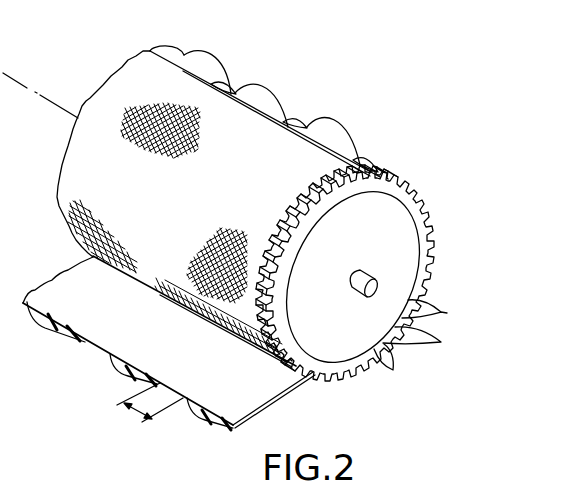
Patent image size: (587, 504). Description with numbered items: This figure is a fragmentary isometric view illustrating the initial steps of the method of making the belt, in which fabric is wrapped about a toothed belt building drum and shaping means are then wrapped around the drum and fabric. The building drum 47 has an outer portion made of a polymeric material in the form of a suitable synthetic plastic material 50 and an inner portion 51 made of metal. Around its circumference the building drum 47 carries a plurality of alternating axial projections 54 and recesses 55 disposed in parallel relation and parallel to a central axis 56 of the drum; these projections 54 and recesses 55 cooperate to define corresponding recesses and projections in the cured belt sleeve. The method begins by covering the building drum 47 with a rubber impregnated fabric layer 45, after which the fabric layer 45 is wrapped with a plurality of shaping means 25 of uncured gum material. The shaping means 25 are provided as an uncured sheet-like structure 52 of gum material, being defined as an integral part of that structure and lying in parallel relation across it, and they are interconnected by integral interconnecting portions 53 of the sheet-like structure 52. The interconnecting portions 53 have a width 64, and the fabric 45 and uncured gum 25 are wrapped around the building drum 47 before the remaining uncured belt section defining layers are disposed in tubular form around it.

The shaping means 25 is at (187, 56).
The interconnecting portions 53 is at (232, 80).
The rubber impregnated fabric layer 45 is at (117, 88).
The central axis 56 is at (55, 107).
The belt building drum 47 is at (433, 232).
The synthetic plastic material 50 is at (428, 274).
The inner portion 51 is at (377, 293).
The recesses 55 is at (441, 342).
The axial projections 54 is at (393, 370).
The sheet-like structure 52 is at (272, 407).
The width 64 is at (131, 408).